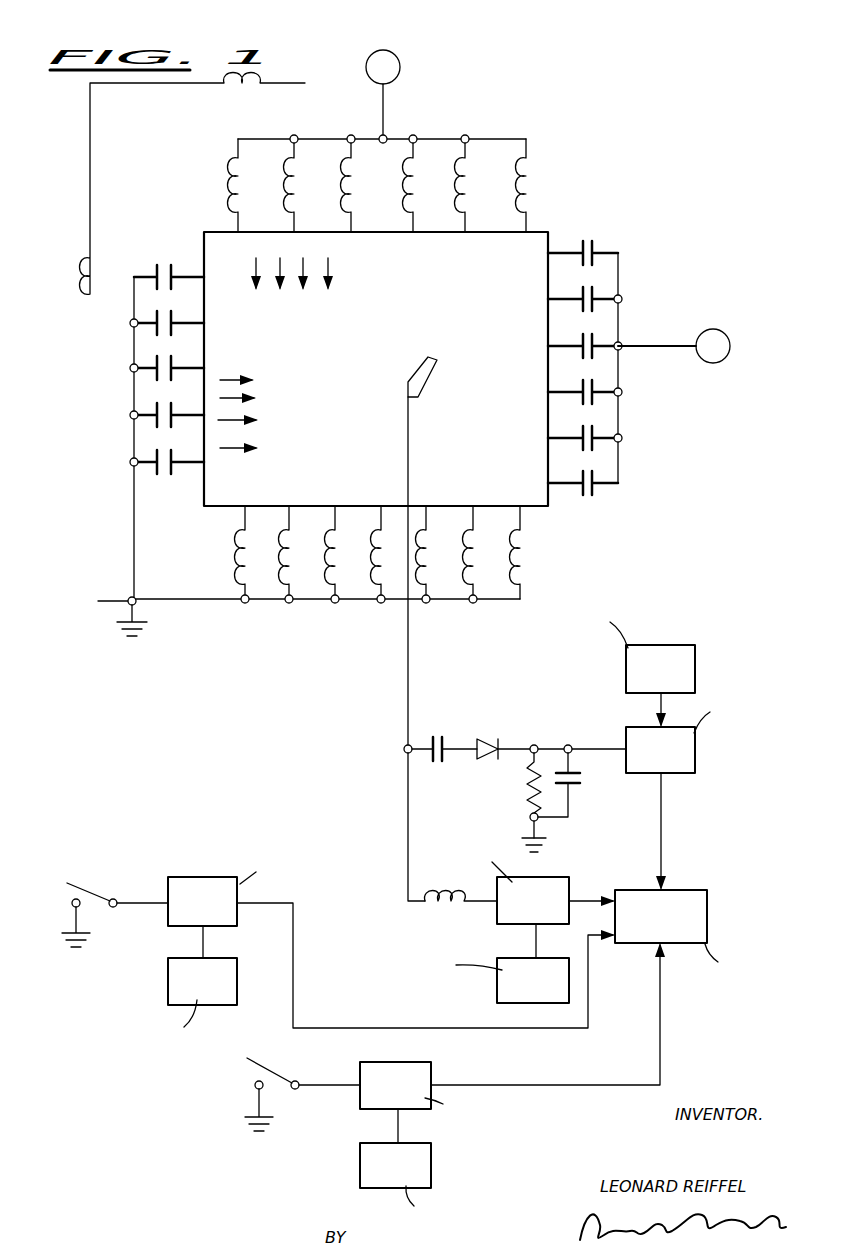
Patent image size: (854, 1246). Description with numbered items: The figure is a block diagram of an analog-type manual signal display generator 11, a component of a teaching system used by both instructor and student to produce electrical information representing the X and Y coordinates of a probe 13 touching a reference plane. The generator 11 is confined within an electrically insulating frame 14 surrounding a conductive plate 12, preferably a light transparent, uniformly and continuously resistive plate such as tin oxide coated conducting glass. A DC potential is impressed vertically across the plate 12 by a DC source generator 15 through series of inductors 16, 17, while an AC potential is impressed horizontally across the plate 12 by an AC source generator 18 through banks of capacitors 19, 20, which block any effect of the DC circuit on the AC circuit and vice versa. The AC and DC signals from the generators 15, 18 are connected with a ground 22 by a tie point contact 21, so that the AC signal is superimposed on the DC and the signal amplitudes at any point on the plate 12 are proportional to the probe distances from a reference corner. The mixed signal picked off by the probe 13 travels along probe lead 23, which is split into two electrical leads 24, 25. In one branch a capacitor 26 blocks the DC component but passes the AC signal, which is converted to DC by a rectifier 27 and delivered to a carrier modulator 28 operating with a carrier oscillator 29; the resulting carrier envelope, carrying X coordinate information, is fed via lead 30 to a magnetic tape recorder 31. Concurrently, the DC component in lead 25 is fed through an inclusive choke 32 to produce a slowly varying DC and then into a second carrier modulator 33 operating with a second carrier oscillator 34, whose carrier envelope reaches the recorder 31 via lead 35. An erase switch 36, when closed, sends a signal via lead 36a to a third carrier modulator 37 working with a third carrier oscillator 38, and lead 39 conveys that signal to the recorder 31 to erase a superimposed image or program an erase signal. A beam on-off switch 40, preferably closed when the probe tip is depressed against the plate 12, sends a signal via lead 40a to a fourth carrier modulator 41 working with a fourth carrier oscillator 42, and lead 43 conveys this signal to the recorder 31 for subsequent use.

The manual signal display generator 11 is at (592, 66).
The conductive plate 12 is at (500, 378).
The probe 13 is at (428, 392).
The electrically insulating frame 14 is at (90, 168).
The DC source generator 15 is at (397, 58).
The inductors 16 is at (532, 184).
The inductors 17 is at (532, 554).
The AC source generator 18 is at (728, 342).
The capacitors 19 is at (596, 325).
The capacitors 20 is at (175, 332).
The tie point contact 21 is at (130, 600).
The ground 22 is at (122, 632).
The probe lead 23 is at (410, 684).
The electrical lead 24 is at (413, 756).
The electrical lead 25 is at (406, 886).
The capacitor 26 is at (435, 740).
The rectifier 27 is at (490, 742).
The carrier modulator 28 is at (680, 760).
The carrier oscillator 29 is at (680, 676).
The lead 30 is at (662, 824).
The magnetic tape recorder 31 is at (690, 892).
The inclusive choke 32 is at (440, 912).
The second carrier modulator 33 is at (535, 884).
The second carrier oscillator 34 is at (505, 995).
The lead 35 is at (583, 899).
The erase switch 36 is at (80, 880).
The lead 36a is at (135, 900).
The third carrier modulator 37 is at (212, 885).
The third carrier oscillator 38 is at (178, 982).
The lead 39 is at (590, 985).
The beam on-off switch 40 is at (253, 1087).
The lead 40a is at (323, 1092).
The fourth carrier modulator 41 is at (422, 1075).
The fourth carrier oscillator 42 is at (425, 1170).
The lead 43 is at (582, 1090).